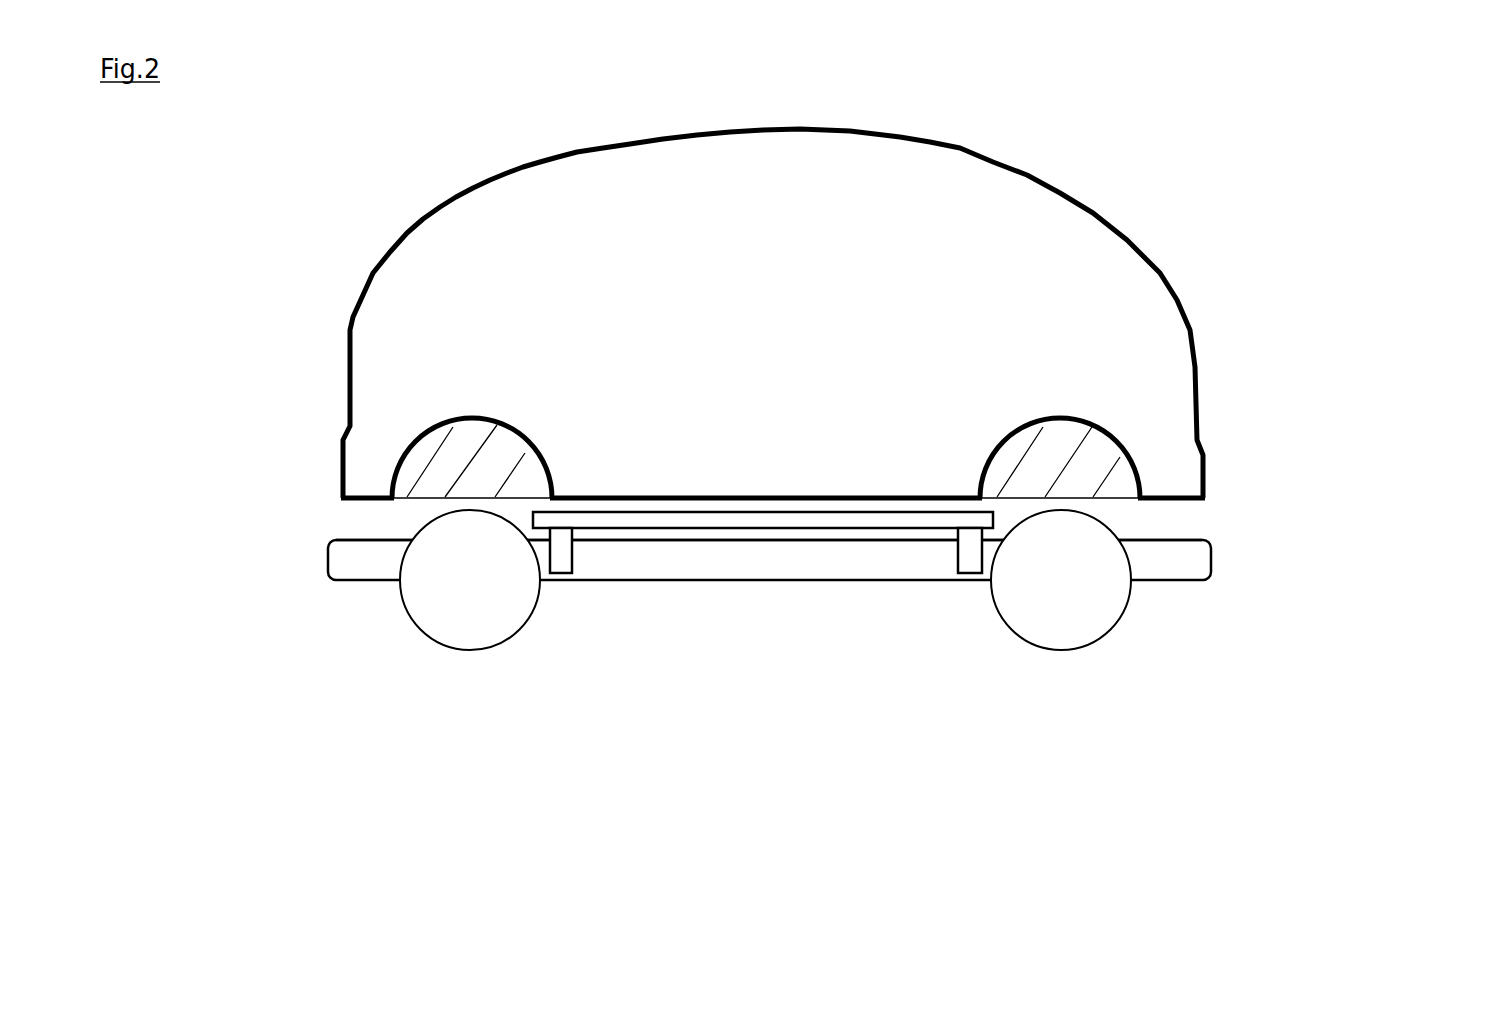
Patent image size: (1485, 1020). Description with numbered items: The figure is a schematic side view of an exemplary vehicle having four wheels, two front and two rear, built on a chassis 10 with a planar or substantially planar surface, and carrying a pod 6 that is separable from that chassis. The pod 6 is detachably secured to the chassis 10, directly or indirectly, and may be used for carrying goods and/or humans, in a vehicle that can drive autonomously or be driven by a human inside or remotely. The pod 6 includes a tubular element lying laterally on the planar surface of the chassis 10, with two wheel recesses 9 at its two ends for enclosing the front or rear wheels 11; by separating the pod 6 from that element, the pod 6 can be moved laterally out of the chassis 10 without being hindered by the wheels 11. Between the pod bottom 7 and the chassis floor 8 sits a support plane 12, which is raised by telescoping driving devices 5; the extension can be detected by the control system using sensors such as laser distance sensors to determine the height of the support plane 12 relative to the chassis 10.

The telescoping driving device 5 is at (583, 560).
The pod 6 is at (345, 278).
The Pod Bottom 7 is at (605, 490).
The Chassis Floor 8 is at (365, 538).
The wheel recesses 9 is at (525, 418).
The planar surface chassis 10 is at (325, 565).
The Wheels 11 is at (990, 600).
The support plane 12 is at (997, 518).